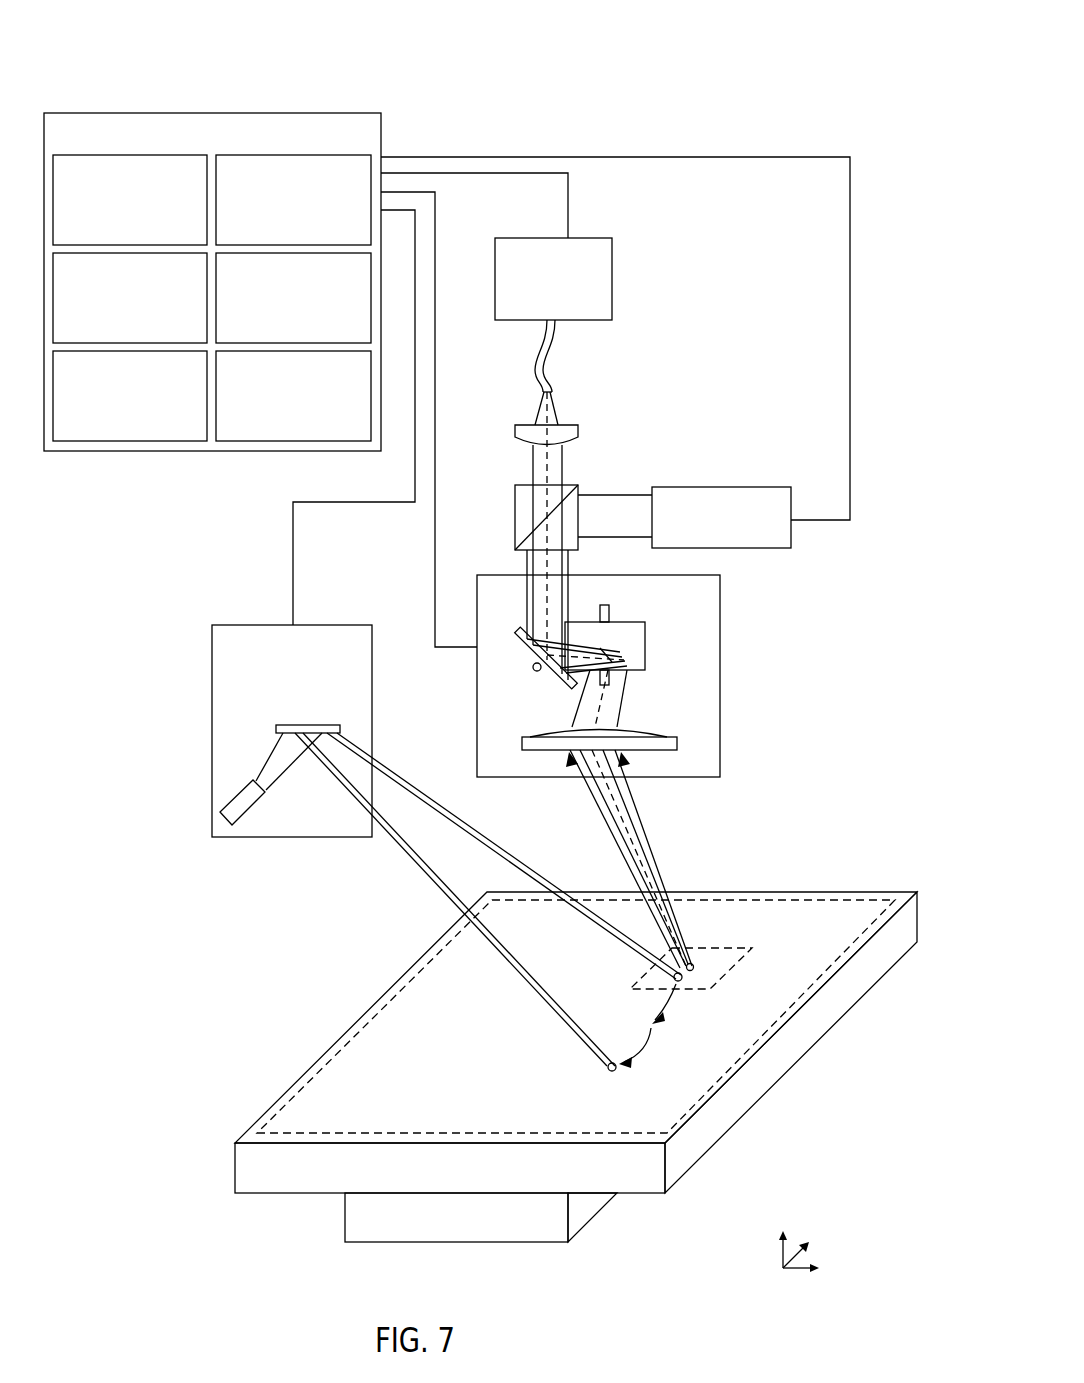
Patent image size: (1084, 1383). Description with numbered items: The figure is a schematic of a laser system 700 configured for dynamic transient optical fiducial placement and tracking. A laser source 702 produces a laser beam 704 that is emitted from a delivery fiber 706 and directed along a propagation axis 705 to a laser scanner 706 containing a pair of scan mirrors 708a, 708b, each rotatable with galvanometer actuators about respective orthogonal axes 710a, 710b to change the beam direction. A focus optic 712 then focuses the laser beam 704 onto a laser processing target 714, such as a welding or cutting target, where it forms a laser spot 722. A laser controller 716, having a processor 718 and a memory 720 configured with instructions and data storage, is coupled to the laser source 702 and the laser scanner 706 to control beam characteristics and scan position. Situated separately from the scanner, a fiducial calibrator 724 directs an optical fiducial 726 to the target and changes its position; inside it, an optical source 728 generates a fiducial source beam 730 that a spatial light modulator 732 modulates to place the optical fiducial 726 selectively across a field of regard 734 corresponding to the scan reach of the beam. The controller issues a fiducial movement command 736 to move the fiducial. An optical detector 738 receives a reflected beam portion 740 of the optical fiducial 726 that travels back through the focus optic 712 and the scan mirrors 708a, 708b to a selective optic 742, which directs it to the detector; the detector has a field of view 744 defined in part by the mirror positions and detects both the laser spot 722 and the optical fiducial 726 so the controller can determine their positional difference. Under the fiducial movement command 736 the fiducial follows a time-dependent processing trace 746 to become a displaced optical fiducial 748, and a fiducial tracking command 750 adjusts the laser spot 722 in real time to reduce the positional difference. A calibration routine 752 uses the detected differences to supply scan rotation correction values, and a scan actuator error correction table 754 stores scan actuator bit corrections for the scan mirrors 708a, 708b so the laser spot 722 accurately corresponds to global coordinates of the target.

The laser system 700 is at (777, 68).
The laser source 702 is at (553, 279).
The laser beam 704 is at (562, 452).
The propagation axis 705 is at (548, 477).
The delivery fiber / laser scanner 706 is at (547, 355).
The scan mirror 708a is at (521, 652).
The scan mirror 708b is at (647, 647).
The axis 710a is at (537, 672).
The axis 710b is at (612, 617).
The focus optic 712 is at (677, 748).
The laser processing target 714 is at (740, 1012).
The laser controller 716 is at (447, 380).
The processor 718 is at (130, 200).
The memory 720 is at (293, 200).
The laser spot 722 is at (696, 962).
The fiducial calibrator 724 is at (408, 845).
The optical fiducial 726 is at (680, 982).
The optical source 728 is at (232, 793).
The fiducial source beam 730 is at (282, 763).
The spatial light modulator 732 is at (277, 727).
The field of regard 734 is at (848, 945).
The fiducial movement command 736 is at (130, 396).
The optical detector 738 is at (721, 517).
The reflected beam portion 740 is at (632, 510).
The selective optic 742 is at (517, 513).
The field of view 744 is at (733, 965).
The time-dependent processing trace 746 is at (655, 1004).
The displaced optical fiducial 748 is at (618, 1077).
The fiducial tracking command 750 is at (293, 396).
The calibration routine 752 is at (293, 298).
The scan actuator error correction table 754 is at (130, 298).